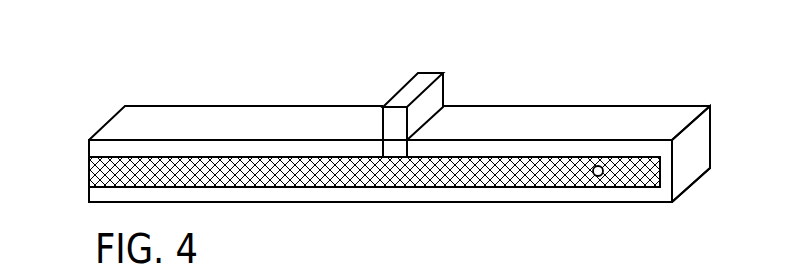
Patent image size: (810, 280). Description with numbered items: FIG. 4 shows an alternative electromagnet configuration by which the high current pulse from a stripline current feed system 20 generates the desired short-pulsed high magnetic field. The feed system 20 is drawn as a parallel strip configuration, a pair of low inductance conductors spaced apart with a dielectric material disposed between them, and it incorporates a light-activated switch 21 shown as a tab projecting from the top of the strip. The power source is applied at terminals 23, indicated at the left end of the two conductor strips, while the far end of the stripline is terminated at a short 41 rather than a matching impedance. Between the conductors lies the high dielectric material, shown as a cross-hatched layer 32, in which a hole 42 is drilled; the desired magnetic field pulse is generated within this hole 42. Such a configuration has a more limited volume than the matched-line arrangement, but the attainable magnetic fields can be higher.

The current feed system 20 is at (232, 73).
The light-activated switch 21 is at (427, 72).
The terminals 23 is at (89, 193).
The mesh core layer 32 is at (403, 187).
The short 41 is at (712, 143).
The hole 42 is at (598, 176).